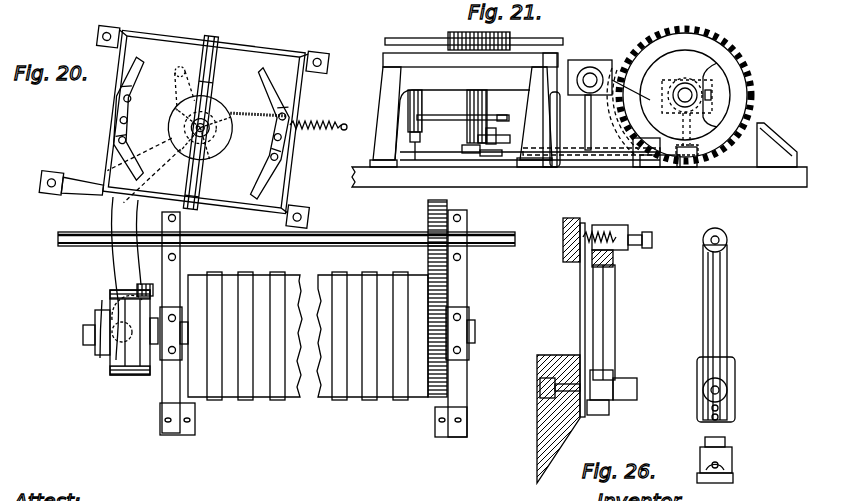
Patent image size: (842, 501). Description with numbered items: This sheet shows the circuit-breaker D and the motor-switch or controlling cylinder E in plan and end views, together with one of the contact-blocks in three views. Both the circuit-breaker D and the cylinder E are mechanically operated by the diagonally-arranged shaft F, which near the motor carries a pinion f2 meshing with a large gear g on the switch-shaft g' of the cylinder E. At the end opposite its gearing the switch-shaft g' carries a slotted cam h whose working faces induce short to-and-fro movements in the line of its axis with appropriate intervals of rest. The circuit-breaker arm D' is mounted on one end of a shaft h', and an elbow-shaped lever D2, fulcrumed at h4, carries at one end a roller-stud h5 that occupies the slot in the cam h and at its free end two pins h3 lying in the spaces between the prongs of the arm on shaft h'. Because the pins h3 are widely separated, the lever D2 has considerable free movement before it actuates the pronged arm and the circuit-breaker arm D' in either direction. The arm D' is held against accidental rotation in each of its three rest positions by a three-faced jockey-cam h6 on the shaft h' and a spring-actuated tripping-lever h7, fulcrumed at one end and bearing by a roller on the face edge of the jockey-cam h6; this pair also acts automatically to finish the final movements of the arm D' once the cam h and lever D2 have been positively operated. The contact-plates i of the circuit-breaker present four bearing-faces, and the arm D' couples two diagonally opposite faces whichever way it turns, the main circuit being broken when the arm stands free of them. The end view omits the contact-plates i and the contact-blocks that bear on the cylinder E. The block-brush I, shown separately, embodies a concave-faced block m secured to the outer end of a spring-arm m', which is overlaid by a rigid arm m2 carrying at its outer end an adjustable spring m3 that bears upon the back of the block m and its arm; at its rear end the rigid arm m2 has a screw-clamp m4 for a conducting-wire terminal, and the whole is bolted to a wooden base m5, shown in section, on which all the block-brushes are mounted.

In FIG. 20, the circuit-breaker D is at (184, 120).
In FIG. 21, the circuit-breaker D is at (579, 120).
In FIG. 20, the circuit-breaker arm D' is at (216, 114).
In FIG. 21, the circuit-breaker arm D' is at (474, 35).
In FIG. 20, the elbow-shaped lever D2 is at (162, 250).
In FIG. 21, the elbow-shaped lever D2 is at (625, 151).
In FIG. 20, the contact-plates i is at (146, 70).
In FIG. 20, the slotted cam h is at (120, 342).
In FIG. 20, the shaft h' is at (197, 140).
In FIG. 21, the shaft h' is at (475, 155).
In FIG. 21, the pins h3 is at (505, 138).
In FIG. 21, the fulcrum h4 is at (650, 170).
In FIG. 21, the roller-stud h5 is at (695, 160).
In FIG. 21, the jockey-cam h6 is at (507, 109).
In FIG. 21, the tripping-lever h7 is at (457, 125).
In FIG. 20, the shaft F is at (286, 183).
In FIG. 21, the bearing block F' is at (600, 94).
In FIG. 20, the pinion f2 is at (430, 212).
In FIG. 21, the pinion f2 is at (604, 58).
In FIG. 20, the motor-switch cylinder E is at (304, 345).
In FIG. 21, the motor-switch cylinder E is at (717, 63).
In FIG. 20, the gear g is at (424, 311).
In FIG. 21, the gear g is at (685, 85).
In FIG. 20, the switch-shaft g' is at (484, 331).
In FIG. 21, the switch-shaft g' is at (687, 102).
In FIG. 26, the concave-faced block m is at (560, 237).
In FIG. 26, the spring-arm m' is at (568, 320).
In FIG. 26, the rigid arm m2 is at (614, 282).
In FIG. 26, the adjustable spring m3 is at (604, 230).
In FIG. 26, the screw-clamp m4 is at (618, 408).
In FIG. 26, the wooden base m5 is at (565, 419).
In FIG. 26, the block-brush I is at (685, 387).